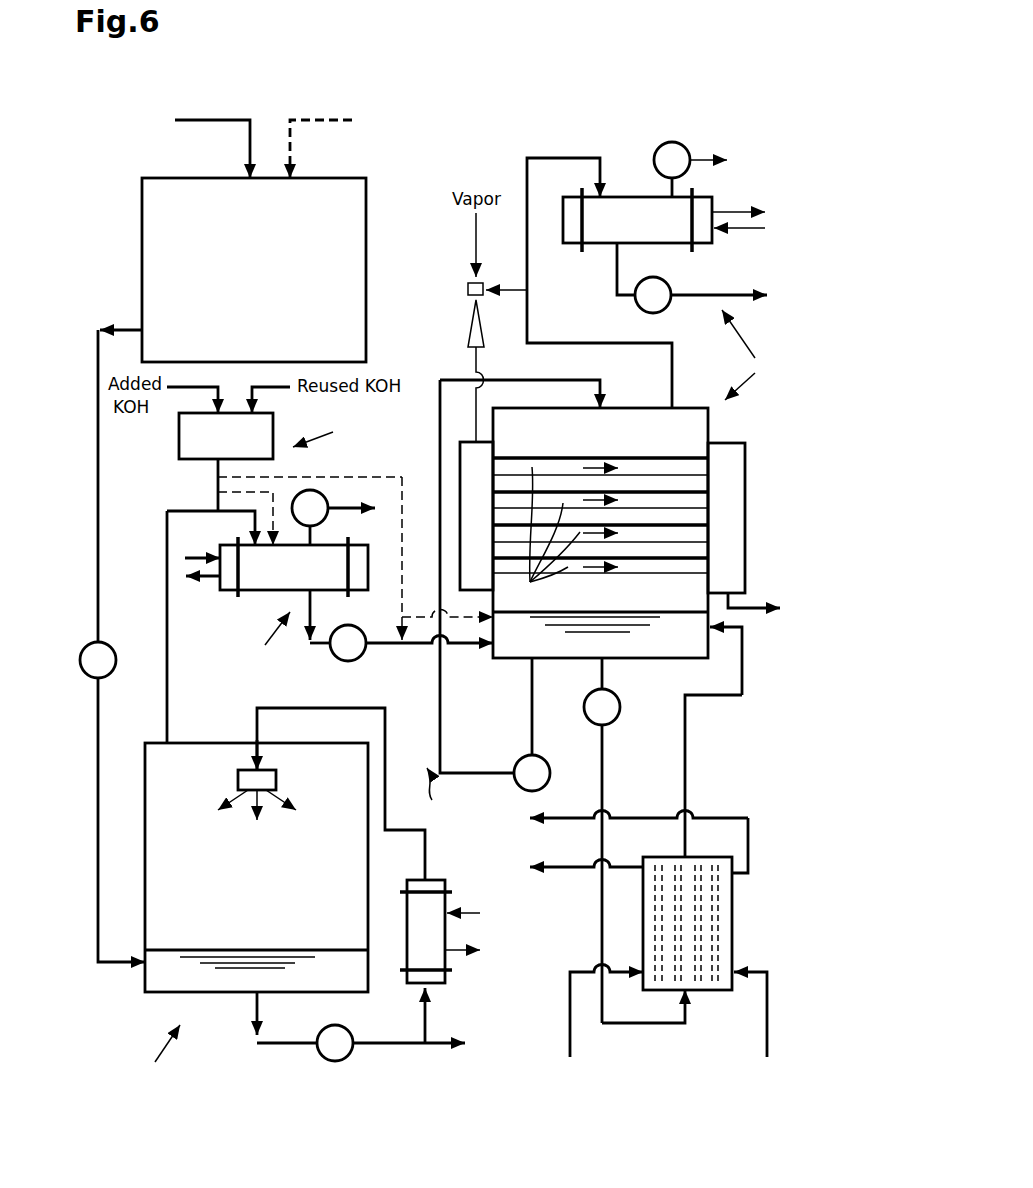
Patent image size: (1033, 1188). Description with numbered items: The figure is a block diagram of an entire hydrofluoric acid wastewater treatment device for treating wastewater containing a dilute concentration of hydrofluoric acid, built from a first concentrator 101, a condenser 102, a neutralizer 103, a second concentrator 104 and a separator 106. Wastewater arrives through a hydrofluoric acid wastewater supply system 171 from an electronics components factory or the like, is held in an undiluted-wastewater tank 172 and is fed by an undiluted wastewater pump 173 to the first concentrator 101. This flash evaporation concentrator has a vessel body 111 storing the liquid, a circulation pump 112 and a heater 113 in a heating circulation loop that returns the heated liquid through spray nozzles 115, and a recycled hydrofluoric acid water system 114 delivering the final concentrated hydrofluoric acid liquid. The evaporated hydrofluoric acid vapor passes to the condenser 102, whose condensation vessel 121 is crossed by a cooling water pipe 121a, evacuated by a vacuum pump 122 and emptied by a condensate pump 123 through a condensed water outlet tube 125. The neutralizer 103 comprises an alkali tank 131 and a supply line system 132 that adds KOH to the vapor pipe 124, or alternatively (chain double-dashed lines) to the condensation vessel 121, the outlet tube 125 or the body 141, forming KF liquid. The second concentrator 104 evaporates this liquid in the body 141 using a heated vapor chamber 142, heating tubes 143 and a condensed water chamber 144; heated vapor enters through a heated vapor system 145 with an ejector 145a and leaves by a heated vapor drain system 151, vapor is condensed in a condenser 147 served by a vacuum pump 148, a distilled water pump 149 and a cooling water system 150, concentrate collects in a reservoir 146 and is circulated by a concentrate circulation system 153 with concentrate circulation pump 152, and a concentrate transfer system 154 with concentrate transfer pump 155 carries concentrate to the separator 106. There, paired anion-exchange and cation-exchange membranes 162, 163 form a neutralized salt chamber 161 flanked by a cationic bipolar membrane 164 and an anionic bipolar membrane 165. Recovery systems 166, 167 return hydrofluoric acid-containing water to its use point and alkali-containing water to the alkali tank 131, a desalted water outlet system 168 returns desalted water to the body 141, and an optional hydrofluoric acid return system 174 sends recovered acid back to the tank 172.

The first concentrator 101 is at (150, 1054).
The condenser 102 is at (261, 642).
The neutralizer 103 is at (335, 432).
The second concentrator 104 is at (761, 355).
The separator 106 is at (735, 902).
The vessel body 111 is at (276, 874).
The circulation pump 112 is at (346, 1030).
The heater 113 is at (447, 977).
The recycled hydrofluoric acid water system 114 is at (430, 1047).
The spray nozzles 115 is at (278, 780).
The condensation vessel 121 is at (318, 582).
The cooling water pipe 121a is at (198, 578).
The vacuum pump 122 is at (325, 495).
The condensate pump 123 is at (335, 658).
The vapor pipe 124 is at (168, 672).
The condensed water outlet tube 125 is at (390, 650).
The alkali tank 131 is at (249, 451).
The supply line system 132 is at (218, 478).
The body 141 is at (709, 432).
The heated vapor chamber 142 is at (460, 485).
The heating tubes 143 is at (543, 538).
The condensed water chamber 144 is at (746, 535).
The heated vapor system 145 is at (470, 252).
The ejector 145a is at (468, 327).
The reservoir 146 is at (683, 622).
The condenser 147 is at (658, 232).
The vacuum pump 148 is at (672, 142).
The distilled water pump 149 is at (635, 297).
The cooling water system 150 is at (733, 215).
The heated vapor drain system 151 is at (745, 612).
The concentrate circulation pump 152 is at (520, 758).
The concentrate circulation system 153 is at (414, 798).
The concentrate transfer system 154 is at (605, 788).
The concentrate transfer pump 155 is at (613, 693).
The neutralized salt chamber 161 is at (715, 880).
The anion-exchange membrane 162 is at (652, 880).
The cation-exchange membrane 163 is at (702, 990).
The cationic bipolar membrane 164 is at (735, 925).
The anionic bipolar membrane 165 is at (652, 962).
The recovery system 166 is at (575, 875).
The recovery system 167 is at (545, 822).
The desalted water outlet system 168 is at (686, 748).
The hydrofluoric acid wastewater supply system 171 is at (205, 120).
The undiluted-wastewater tank 172 is at (278, 281).
The undiluted wastewater pump 173 is at (113, 645).
The hydrofluoric acid return system 174 is at (316, 120).